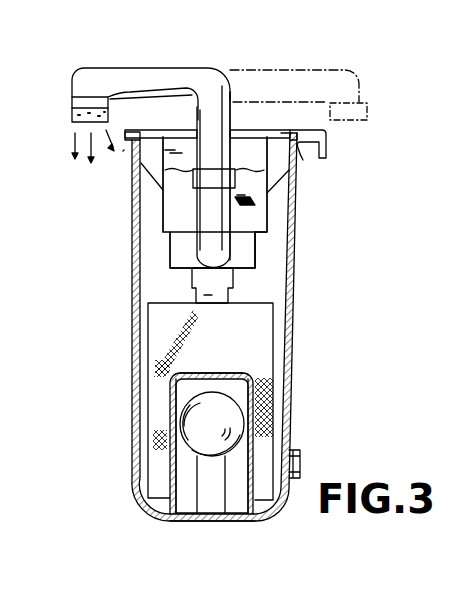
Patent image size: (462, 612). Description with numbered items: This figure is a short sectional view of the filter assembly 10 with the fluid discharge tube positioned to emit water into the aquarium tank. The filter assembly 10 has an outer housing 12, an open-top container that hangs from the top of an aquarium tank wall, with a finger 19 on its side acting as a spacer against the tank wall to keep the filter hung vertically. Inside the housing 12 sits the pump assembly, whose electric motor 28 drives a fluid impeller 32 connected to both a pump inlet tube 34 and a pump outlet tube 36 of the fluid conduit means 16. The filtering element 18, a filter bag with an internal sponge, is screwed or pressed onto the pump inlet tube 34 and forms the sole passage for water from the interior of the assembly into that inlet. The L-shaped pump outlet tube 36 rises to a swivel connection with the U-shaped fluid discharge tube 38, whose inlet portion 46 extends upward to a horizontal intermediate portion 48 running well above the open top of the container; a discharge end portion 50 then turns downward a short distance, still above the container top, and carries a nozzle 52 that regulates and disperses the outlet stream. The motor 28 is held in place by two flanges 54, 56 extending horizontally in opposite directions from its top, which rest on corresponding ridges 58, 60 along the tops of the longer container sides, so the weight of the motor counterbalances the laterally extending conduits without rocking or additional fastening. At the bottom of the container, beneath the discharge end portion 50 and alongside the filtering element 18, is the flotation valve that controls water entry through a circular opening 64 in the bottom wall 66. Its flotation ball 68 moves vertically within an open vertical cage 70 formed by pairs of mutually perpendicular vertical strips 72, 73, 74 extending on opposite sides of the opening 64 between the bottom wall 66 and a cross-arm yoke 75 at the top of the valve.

The filter assembly 10 is at (103, 349).
The outer housing 12 is at (130, 389).
The fluid conduit means 16 is at (255, 203).
The filtering element 18 is at (278, 316).
The finger 19 is at (302, 463).
The electric motor 28 is at (163, 207).
The fluid impeller 32 is at (180, 254).
The pump inlet tube 34 is at (190, 280).
The pump outlet tube 36 is at (200, 210).
The fluid discharge tube 38 is at (173, 78).
The inlet portion 46 is at (231, 117).
The intermediate portion 48 is at (128, 68).
The discharge end portion 50 is at (70, 97).
The nozzle 52 is at (72, 116).
The flange 54 is at (145, 132).
The flange 56 is at (280, 137).
The ridge 58 is at (124, 150).
The ridge 60 is at (305, 155).
The circular opening 64 is at (184, 523).
The bottom wall 66 is at (255, 523).
The flotation ball 68 is at (190, 425).
The vertical cage 70 is at (257, 443).
The vertical strip 72 is at (208, 486).
The vertical strip 73 is at (167, 463).
The vertical strip 74 is at (258, 392).
The cross-arm yoke 75 is at (230, 374).